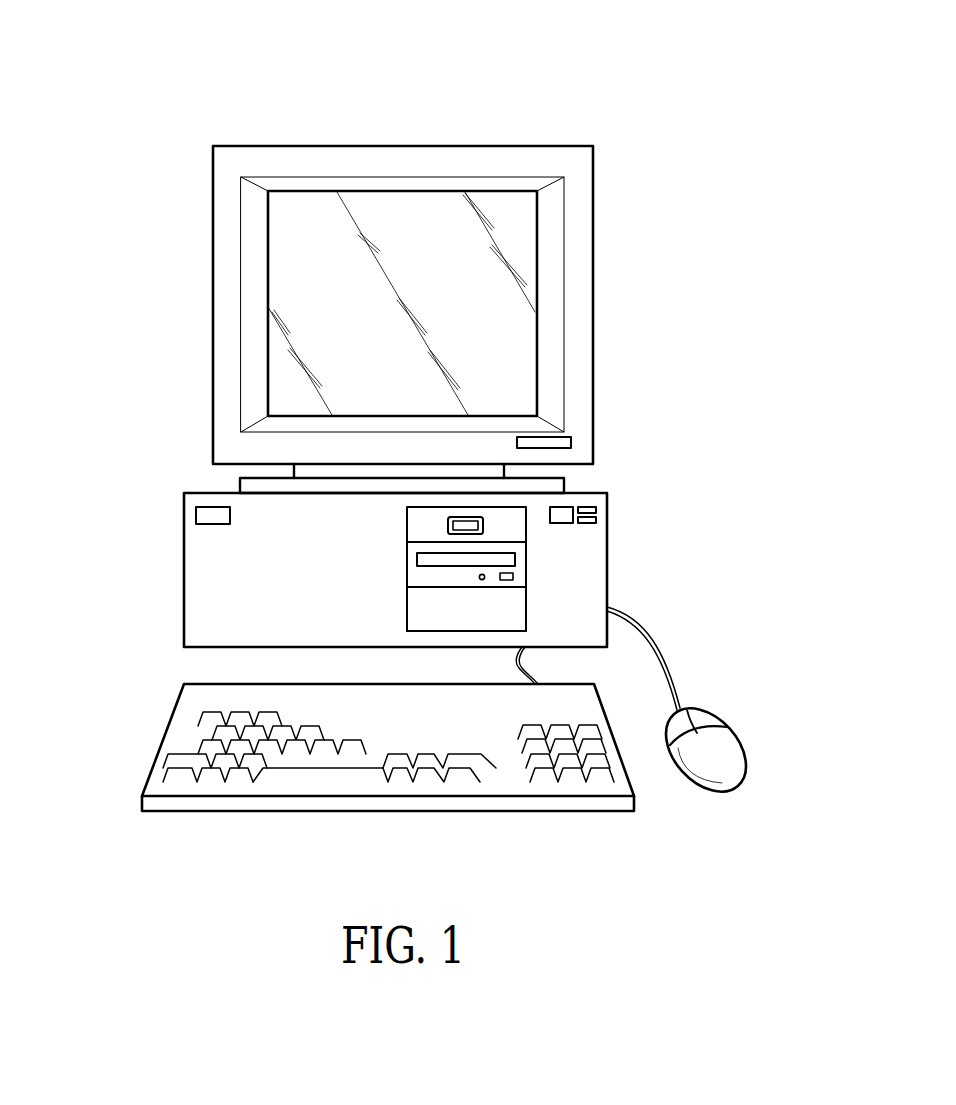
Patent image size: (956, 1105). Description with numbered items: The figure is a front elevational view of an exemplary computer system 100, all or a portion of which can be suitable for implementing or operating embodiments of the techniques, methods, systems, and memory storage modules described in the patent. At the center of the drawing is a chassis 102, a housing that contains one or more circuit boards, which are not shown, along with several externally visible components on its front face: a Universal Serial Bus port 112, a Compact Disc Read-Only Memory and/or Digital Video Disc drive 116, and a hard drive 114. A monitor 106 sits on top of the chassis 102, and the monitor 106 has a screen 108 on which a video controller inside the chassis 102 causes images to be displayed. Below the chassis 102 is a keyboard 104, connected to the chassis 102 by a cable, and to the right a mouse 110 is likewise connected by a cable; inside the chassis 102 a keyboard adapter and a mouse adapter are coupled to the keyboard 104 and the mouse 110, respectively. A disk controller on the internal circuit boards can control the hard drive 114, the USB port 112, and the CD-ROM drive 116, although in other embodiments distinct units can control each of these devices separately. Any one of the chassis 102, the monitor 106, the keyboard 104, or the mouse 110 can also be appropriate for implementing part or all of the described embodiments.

The computer system 100 is at (583, 122).
The chassis 102 is at (183, 572).
The keyboard 104 is at (165, 733).
The monitor 106 is at (288, 146).
The screen 108 is at (322, 312).
The mouse 110 is at (725, 740).
The Universal Serial Bus (USB) port 112 is at (483, 519).
The hard drive 114 is at (517, 607).
The Compact Disc Read-Only Memory (CD-ROM) and/or Digital Video Disc (DVD) drive 116 is at (517, 565).